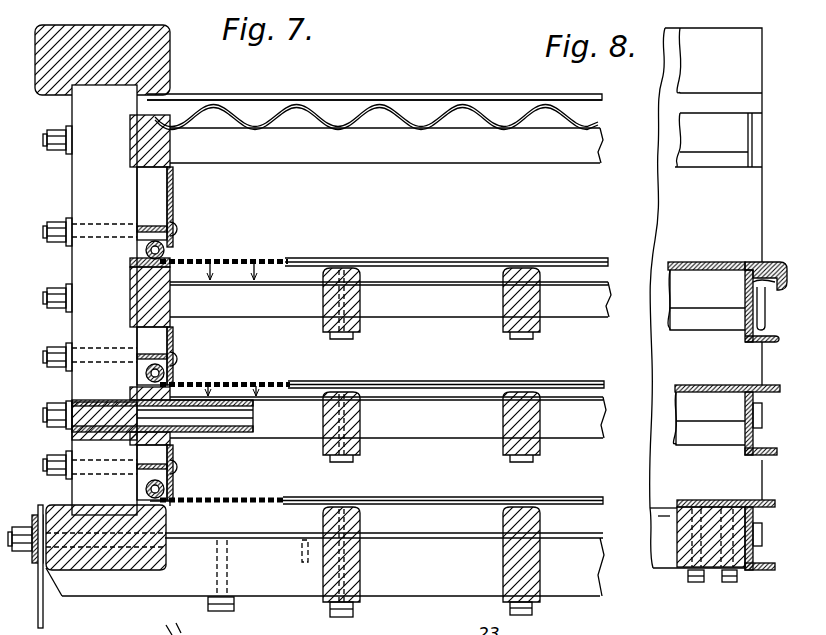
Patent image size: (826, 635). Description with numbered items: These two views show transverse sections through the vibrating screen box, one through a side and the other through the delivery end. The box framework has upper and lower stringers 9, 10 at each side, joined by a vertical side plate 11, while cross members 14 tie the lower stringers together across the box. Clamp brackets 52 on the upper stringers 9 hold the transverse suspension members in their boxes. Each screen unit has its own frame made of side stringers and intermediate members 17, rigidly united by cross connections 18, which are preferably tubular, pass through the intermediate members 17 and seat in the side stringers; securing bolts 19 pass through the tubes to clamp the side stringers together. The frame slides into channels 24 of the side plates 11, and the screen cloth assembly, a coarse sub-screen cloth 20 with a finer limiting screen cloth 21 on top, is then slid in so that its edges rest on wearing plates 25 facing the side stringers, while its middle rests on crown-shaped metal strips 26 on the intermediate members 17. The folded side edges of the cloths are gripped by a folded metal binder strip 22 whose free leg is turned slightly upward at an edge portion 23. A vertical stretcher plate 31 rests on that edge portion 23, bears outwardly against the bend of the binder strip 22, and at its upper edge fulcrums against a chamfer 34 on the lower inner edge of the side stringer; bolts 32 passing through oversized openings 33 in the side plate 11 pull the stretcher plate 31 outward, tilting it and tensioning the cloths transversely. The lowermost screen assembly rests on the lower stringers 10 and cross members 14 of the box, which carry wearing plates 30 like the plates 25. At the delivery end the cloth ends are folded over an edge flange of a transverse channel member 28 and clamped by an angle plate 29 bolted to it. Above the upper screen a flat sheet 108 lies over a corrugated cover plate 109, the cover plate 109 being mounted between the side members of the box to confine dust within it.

In FIG. 7, the upper stringer 9 is at (141, 26).
In FIG. 7, the lower stringer 10 is at (93, 568).
In FIG. 7, the side plate 11 is at (72, 272).
In FIG. 7, the cross member 14 is at (437, 597).
In FIG. 8, the cross member 14 is at (717, 572).
In FIG. 7, the intermediate member 17 is at (362, 298).
In FIG. 7, the cross connection 18 is at (296, 318).
In FIG. 7, the securing bolt 19 is at (259, 428).
In FIG. 7, the sub-screen cloth 20 is at (307, 283).
In FIG. 7, the limiting screen cloth 21 is at (305, 280).
In FIG. 7, the binder strip 22 is at (183, 247).
In FIG. 7, the upturned edge portion 23 is at (225, 367).
In FIG. 7, the channel 24 is at (130, 300).
In FIG. 7, the wearing plate 25 is at (173, 269).
In FIG. 7, the metal strip 26 is at (356, 275).
In FIG. 8, the transverse channel member 28 is at (747, 298).
In FIG. 8, the angle plate 29 is at (769, 292).
In FIG. 7, the wearing plate 30 is at (168, 501).
In FIG. 8, the wearing plate 30 is at (713, 501).
In FIG. 7, the stretcher plate 31 is at (178, 225).
In FIG. 7, the stretcher bolt 32 is at (152, 333).
In FIG. 7, the opening 33 is at (110, 245).
In FIG. 7, the chamfer 34 is at (176, 170).
In FIG. 7, the clamp bracket 52 is at (150, 222).
In FIG. 7, the top sheet 108 is at (414, 96).
In FIG. 7, the cover plate 109 is at (506, 122).